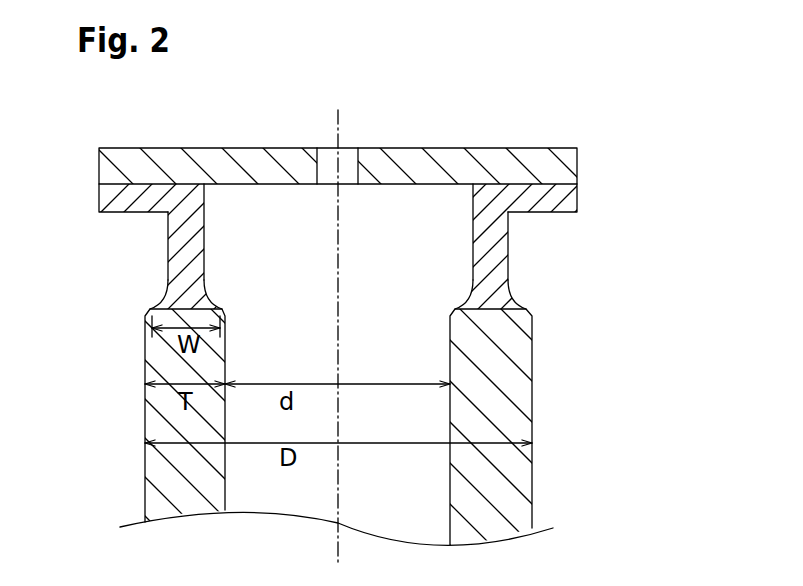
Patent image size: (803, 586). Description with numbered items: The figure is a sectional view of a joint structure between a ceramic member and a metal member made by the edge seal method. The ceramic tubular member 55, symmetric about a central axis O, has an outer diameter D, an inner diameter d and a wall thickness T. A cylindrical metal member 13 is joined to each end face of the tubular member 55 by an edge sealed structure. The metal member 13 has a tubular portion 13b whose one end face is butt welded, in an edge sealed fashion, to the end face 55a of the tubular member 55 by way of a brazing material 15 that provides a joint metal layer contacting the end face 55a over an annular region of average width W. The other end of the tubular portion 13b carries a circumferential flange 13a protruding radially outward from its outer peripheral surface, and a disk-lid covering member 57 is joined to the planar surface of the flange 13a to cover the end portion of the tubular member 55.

The covering member 57 is at (567, 163).
The cylindrical metal member 13 is at (388, 236).
The circumferential flange 13a is at (575, 200).
The tubular portion 13b is at (204, 240).
The brazing material 15 is at (513, 300).
The tubular member 55 is at (515, 395).
The end face of the tubular member 55a is at (164, 302).
The central axis O is at (338, 134).